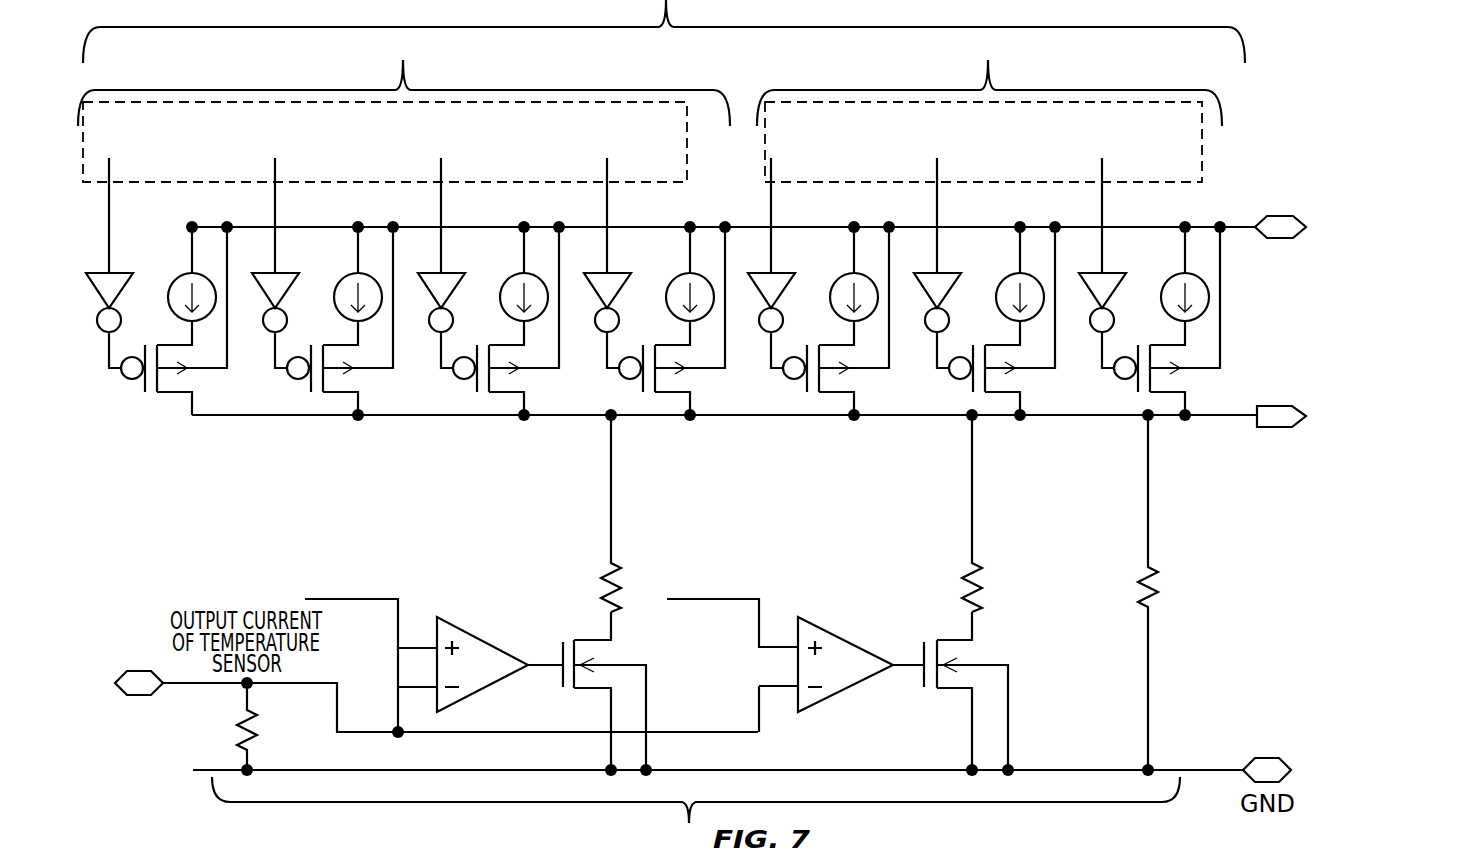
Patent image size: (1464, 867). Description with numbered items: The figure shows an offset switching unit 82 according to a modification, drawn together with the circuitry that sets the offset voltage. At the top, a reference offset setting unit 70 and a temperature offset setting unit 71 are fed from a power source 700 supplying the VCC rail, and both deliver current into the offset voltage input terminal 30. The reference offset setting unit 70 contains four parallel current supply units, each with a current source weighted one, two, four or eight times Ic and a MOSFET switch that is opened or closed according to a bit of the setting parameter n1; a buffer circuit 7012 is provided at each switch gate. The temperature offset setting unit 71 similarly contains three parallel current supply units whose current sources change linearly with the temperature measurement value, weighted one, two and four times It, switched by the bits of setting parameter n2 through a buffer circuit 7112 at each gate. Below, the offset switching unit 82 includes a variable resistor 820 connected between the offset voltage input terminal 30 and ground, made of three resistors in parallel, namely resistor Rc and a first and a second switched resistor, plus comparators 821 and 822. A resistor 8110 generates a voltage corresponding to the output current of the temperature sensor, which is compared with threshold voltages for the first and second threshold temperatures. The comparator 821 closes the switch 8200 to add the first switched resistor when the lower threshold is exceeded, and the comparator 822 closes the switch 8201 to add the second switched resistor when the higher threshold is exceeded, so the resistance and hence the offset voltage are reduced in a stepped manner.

The reference offset setting unit 70 is at (404, 107).
The temperature offset setting unit 71 is at (989, 108).
The power source 700 is at (1282, 242).
The offset voltage input terminal 30 is at (1286, 428).
The offset switching unit 82 is at (723, 634).
The variable resistor 820 is at (1200, 546).
The buffer circuit 7012 is at (101, 332).
The buffer circuit 7112 is at (763, 332).
The comparator 822 is at (440, 617).
The comparator 821 is at (813, 617).
The switch 8201 is at (583, 690).
The switch 8200 is at (945, 690).
The resistor 8110 is at (240, 725).